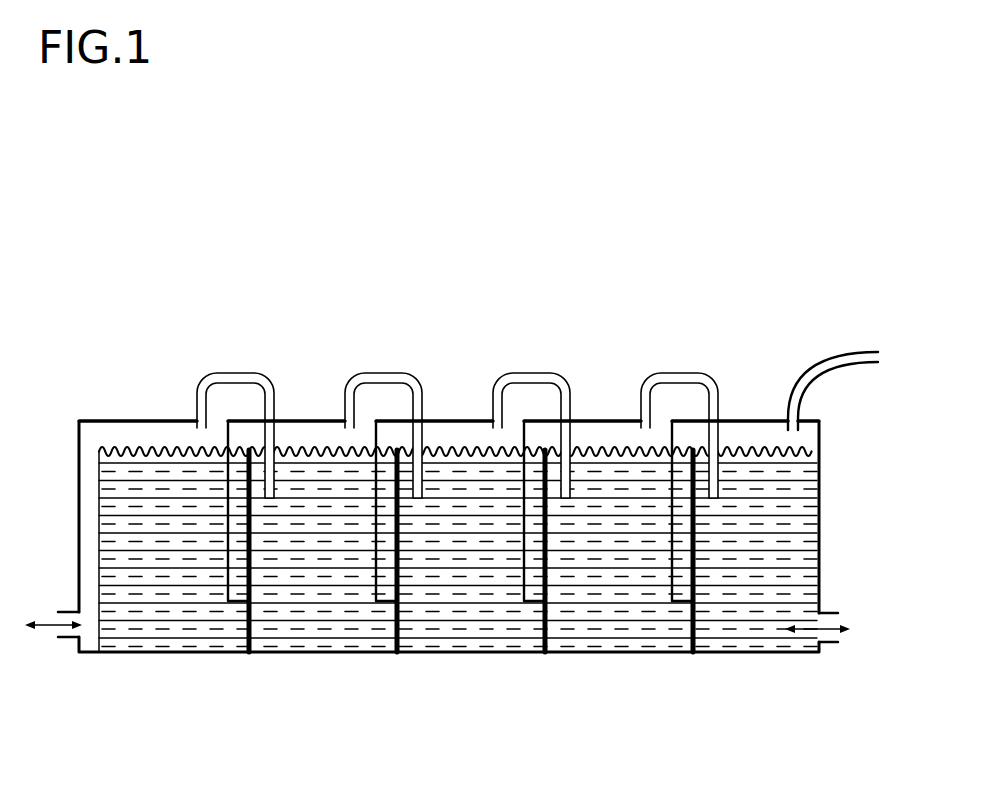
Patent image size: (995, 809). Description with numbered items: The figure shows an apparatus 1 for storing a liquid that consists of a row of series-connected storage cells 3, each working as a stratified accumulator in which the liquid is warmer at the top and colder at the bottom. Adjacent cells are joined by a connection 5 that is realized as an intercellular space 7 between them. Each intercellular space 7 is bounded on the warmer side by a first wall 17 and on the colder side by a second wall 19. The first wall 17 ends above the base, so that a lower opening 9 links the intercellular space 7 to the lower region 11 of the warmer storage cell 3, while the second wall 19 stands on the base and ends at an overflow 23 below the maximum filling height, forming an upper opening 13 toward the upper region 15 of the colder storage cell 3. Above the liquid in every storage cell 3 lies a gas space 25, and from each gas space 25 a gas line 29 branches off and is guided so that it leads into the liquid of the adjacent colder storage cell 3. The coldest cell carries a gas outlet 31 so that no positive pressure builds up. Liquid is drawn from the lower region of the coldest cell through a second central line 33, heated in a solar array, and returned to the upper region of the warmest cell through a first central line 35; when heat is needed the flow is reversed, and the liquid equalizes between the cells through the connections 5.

The apparatus 1 is at (828, 527).
The storage cell 3 is at (270, 642).
The connection 5 is at (470, 527).
The intercellular space 7 is at (247, 452).
The lower opening 9 is at (236, 620).
The lower region 11 is at (115, 640).
The upper opening 13 is at (240, 432).
The upper region 15 is at (612, 422).
The first wall 17 is at (227, 533).
The second wall 19 is at (584, 500).
The overflow 23 is at (398, 455).
The gas space 25 is at (105, 430).
The gas line 29 is at (208, 372).
The gas outlet 31 is at (832, 352).
The second central line 33 is at (838, 637).
The first central line 35 is at (68, 612).